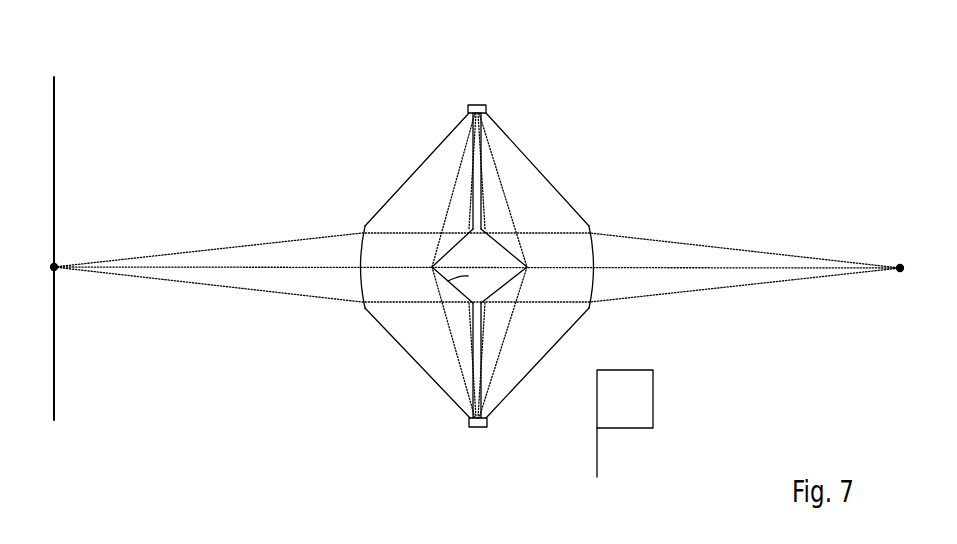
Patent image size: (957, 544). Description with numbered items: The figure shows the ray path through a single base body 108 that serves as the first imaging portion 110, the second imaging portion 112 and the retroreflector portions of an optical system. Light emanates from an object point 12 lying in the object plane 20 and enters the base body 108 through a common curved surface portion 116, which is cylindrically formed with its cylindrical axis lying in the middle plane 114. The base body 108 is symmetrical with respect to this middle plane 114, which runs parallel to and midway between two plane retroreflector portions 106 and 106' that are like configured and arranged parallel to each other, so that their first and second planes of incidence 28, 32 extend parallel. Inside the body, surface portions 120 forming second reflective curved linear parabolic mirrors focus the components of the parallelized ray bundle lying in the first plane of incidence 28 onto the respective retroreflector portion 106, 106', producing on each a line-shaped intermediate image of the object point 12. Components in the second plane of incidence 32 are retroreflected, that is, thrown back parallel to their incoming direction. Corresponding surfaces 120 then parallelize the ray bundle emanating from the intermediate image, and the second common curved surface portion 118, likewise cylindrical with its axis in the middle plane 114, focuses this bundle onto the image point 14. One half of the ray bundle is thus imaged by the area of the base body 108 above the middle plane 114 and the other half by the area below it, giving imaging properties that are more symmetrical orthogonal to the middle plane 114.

The object point 12 is at (59, 254).
The image point 14 is at (900, 268).
The object plane 20 is at (54, 138).
The first plane of incidence 28 is at (597, 442).
The second plane of incidence 32 is at (597, 422).
The plane retroreflector portion 106 is at (441, 455).
The plane retroreflector portion 106' is at (509, 76).
The base body 108 is at (550, 83).
The first imaging portion 110 is at (407, 163).
The second imaging portion 112 is at (570, 193).
The middle plane 114 is at (313, 267).
The common curved surface portion 116 is at (360, 288).
The common curved surface portion 118 is at (594, 243).
The surface portions forming curved linear parabolic mirrors 120 is at (452, 246).